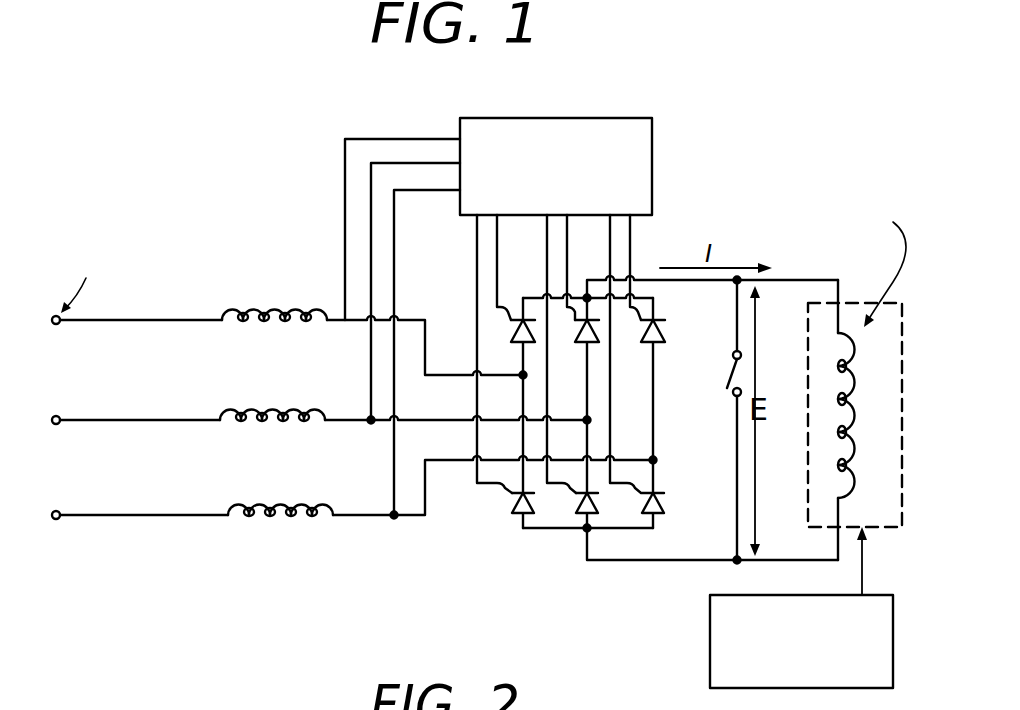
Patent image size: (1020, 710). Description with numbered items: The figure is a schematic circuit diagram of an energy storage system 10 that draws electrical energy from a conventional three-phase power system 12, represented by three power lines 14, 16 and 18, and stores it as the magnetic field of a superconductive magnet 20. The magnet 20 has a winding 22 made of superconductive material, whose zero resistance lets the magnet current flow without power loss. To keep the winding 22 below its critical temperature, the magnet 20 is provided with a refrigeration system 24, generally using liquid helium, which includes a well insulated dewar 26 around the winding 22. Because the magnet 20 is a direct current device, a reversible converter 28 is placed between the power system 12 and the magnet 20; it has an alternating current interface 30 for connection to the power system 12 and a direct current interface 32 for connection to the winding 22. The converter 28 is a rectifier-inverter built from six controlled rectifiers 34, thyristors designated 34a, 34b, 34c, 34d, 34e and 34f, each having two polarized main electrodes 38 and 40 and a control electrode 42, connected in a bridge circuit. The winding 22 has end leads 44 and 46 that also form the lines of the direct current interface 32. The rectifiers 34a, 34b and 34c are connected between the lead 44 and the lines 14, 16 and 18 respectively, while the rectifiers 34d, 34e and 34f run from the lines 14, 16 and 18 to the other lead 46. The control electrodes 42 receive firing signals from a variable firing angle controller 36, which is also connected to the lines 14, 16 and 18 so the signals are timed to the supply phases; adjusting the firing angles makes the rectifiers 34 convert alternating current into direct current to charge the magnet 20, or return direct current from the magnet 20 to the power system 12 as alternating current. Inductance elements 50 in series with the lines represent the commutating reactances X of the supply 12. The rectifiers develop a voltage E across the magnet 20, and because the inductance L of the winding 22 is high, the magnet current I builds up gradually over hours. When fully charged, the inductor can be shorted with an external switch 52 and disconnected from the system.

The energy storage system 10 is at (163, 159).
The three-phase power system 12 is at (52, 548).
The power line 14 is at (57, 326).
The power line 16 is at (57, 426).
The power line 18 is at (57, 521).
The superconductive magnet 20 is at (789, 366).
The winding 22 is at (838, 429).
The refrigeration system 24 is at (790, 688).
The dewar 26 is at (892, 530).
The reversible converter 28 is at (621, 455).
The alternating current interface 30 is at (280, 441).
The direct current interface 32 is at (682, 572).
The controlled rectifiers 34 is at (560, 433).
The controlled rectifier 34a is at (507, 500).
The controlled rectifier 34b is at (575, 500).
The controlled rectifier 34c is at (655, 496).
The controlled rectifier 34d is at (509, 331).
The controlled rectifier 34e is at (580, 336).
The controlled rectifier 34f is at (666, 335).
The variable firing angle controller 36 is at (560, 117).
The main electrode 38 is at (663, 503).
The main electrode 40 is at (659, 491).
The control electrode 42 is at (653, 483).
The end lead 44 is at (838, 542).
The end lead 46 is at (835, 288).
The inductance elements 50 is at (278, 324).
The external switch 52 is at (731, 376).